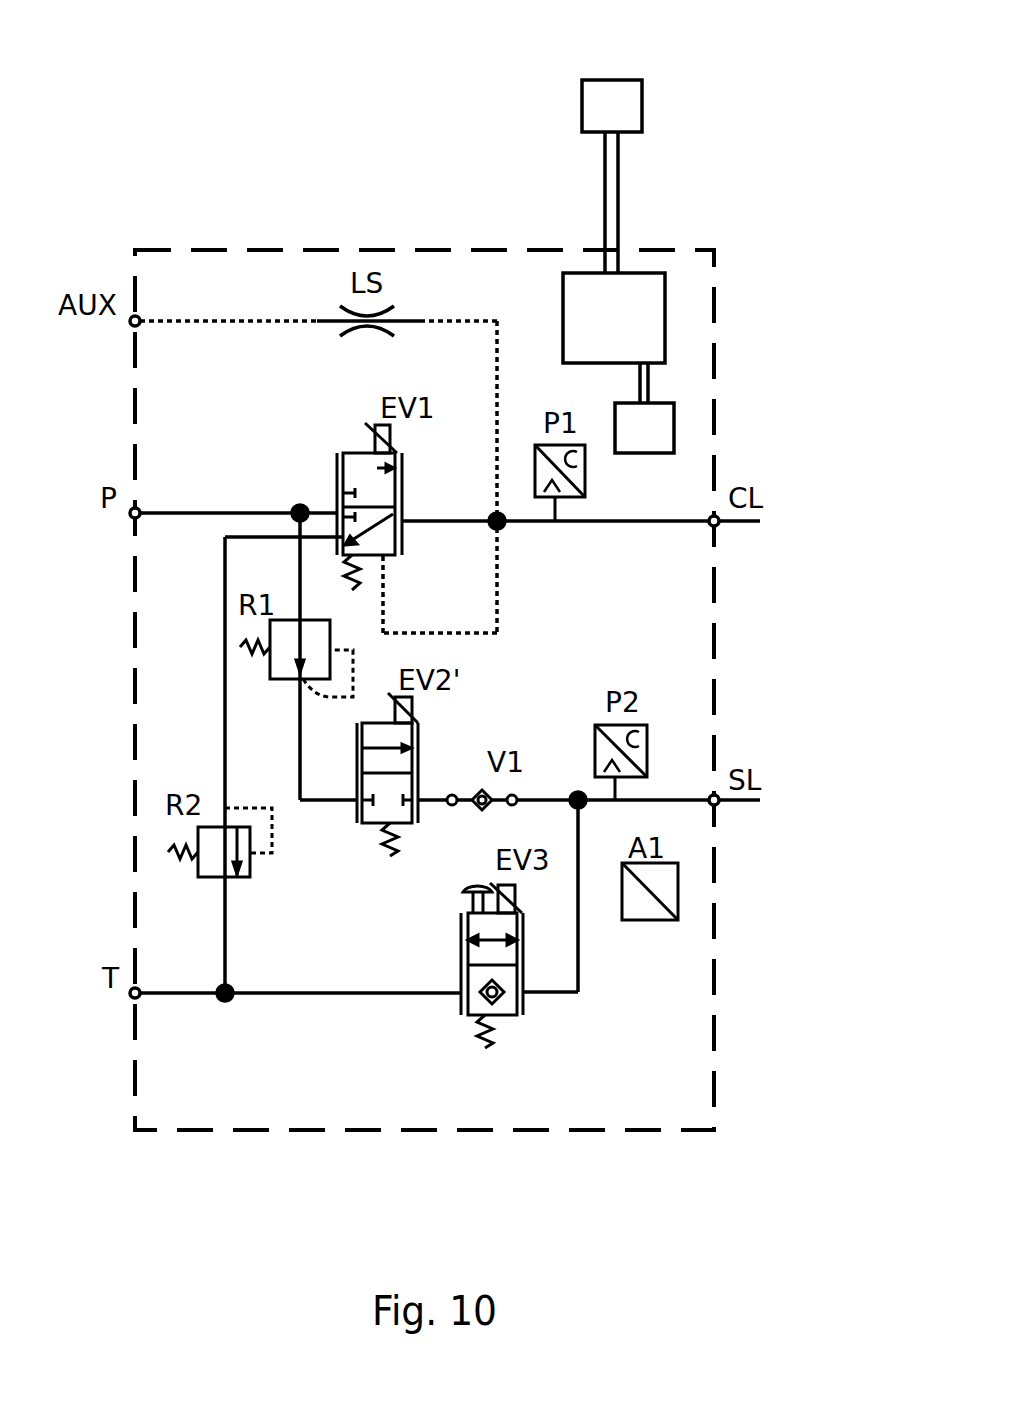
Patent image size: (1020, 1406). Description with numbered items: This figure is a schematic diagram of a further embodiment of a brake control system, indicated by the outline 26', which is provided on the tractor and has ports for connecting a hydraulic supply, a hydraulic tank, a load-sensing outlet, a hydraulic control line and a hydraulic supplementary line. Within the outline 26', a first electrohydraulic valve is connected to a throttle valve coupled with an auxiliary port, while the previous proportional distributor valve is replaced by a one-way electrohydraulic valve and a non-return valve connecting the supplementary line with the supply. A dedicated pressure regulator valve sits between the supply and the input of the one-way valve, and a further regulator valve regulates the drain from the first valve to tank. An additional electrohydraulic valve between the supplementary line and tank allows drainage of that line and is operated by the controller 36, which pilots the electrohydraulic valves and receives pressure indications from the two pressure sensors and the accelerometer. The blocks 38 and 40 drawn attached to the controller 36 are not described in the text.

The brake control system 26' is at (424, 648).
The controller 36 is at (578, 273).
The piston component 38 is at (602, 92).
The control member 40 is at (663, 428).